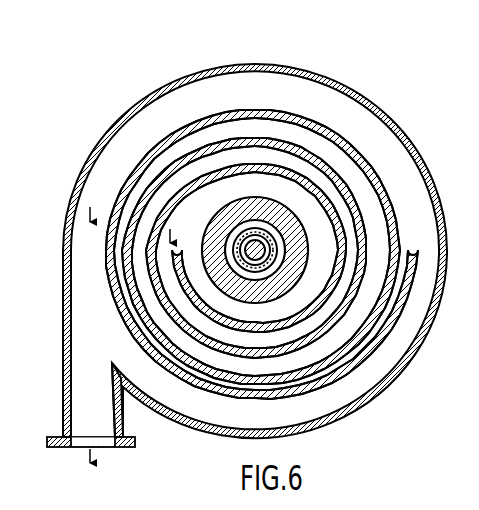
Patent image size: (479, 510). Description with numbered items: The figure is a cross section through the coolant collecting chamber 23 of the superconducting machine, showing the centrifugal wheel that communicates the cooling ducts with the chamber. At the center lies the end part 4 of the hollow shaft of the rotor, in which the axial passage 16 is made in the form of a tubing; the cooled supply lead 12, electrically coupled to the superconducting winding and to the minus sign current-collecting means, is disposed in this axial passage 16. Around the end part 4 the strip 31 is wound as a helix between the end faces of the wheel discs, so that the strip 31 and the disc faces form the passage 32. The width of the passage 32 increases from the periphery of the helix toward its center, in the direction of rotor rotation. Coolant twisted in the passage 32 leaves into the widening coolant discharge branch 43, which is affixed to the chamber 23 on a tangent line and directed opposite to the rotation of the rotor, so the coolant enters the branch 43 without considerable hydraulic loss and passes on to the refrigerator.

The end part of the hollow shaft 4 is at (292, 272).
The supply lead 12 is at (256, 245).
The axial passage 16 is at (233, 240).
The coolant collecting chamber 23 is at (167, 92).
The strip 31 is at (301, 116).
The passage 32 is at (242, 132).
The coolant discharge branch 43 is at (62, 384).